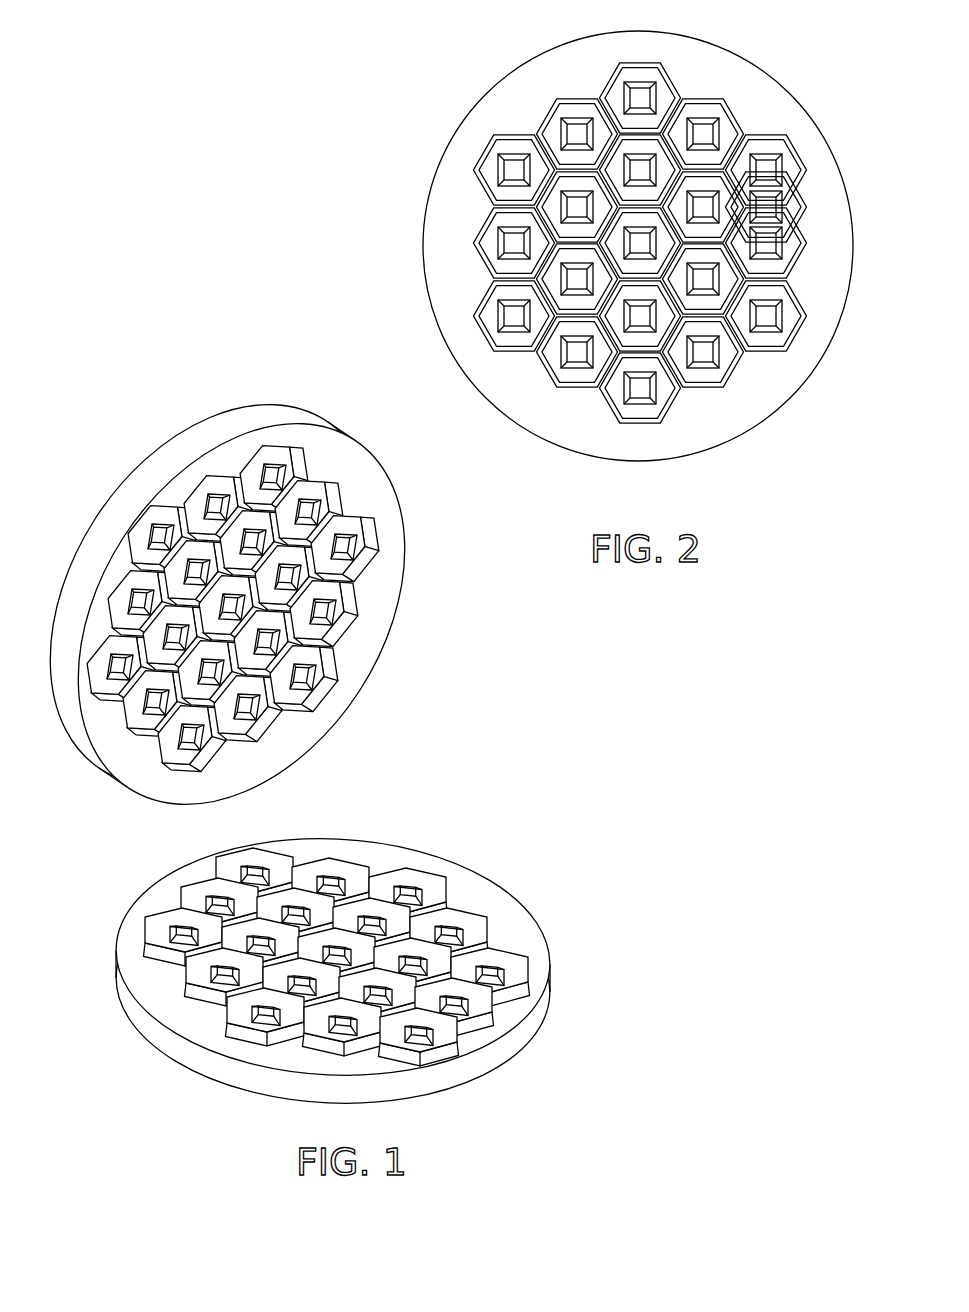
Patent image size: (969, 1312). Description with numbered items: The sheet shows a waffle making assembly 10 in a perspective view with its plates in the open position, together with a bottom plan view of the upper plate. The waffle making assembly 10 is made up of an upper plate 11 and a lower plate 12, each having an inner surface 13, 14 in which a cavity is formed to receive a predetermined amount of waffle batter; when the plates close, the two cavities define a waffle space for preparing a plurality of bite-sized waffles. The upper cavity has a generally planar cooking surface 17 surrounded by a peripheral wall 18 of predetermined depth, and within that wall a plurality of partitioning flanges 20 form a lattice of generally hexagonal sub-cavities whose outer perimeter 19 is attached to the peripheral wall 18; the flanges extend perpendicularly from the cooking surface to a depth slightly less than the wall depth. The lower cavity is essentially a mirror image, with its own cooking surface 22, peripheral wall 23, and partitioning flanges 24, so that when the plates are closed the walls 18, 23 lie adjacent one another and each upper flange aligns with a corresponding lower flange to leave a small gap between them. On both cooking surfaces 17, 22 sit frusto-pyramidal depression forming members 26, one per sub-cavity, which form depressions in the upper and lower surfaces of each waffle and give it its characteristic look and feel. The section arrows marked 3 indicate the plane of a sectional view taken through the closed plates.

In FIG. 1, the section line 3- 3 is at (421, 669).
In FIG. 1, the waffle making assembly 10 is at (271, 364).
In FIG. 2, the upper plate 11 is at (648, 32).
In FIG. 1, the upper plate 11 is at (192, 438).
In FIG. 1, the lower plate 12 is at (127, 887).
In FIG. 2, the inner surface 13 is at (762, 93).
In FIG. 1, the inner surface 13 is at (380, 452).
In FIG. 1, the inner surface 14 is at (300, 843).
In FIG. 2, the cooking surface 17 is at (775, 213).
In FIG. 1, the cooking surface 17 is at (153, 723).
In FIG. 2, the peripheral wall 18 is at (797, 338).
In FIG. 1, the peripheral wall 18 is at (372, 537).
In FIG. 2, the outer perimeter 19 is at (668, 393).
In FIG. 1, the outer perimeter 19 is at (337, 513).
In FIG. 2, the partitioning flanges 20 is at (546, 162).
In FIG. 1, the partitioning flanges 20 is at (215, 730).
In FIG. 1, the cooking surface 22 is at (243, 1015).
In FIG. 1, the peripheral wall 23 is at (442, 847).
In FIG. 1, the partitioning flanges 24 is at (543, 1025).
In FIG. 2, the depression forming members 26 is at (498, 313).
In FIG. 1, the depression forming members 26 is at (220, 502).